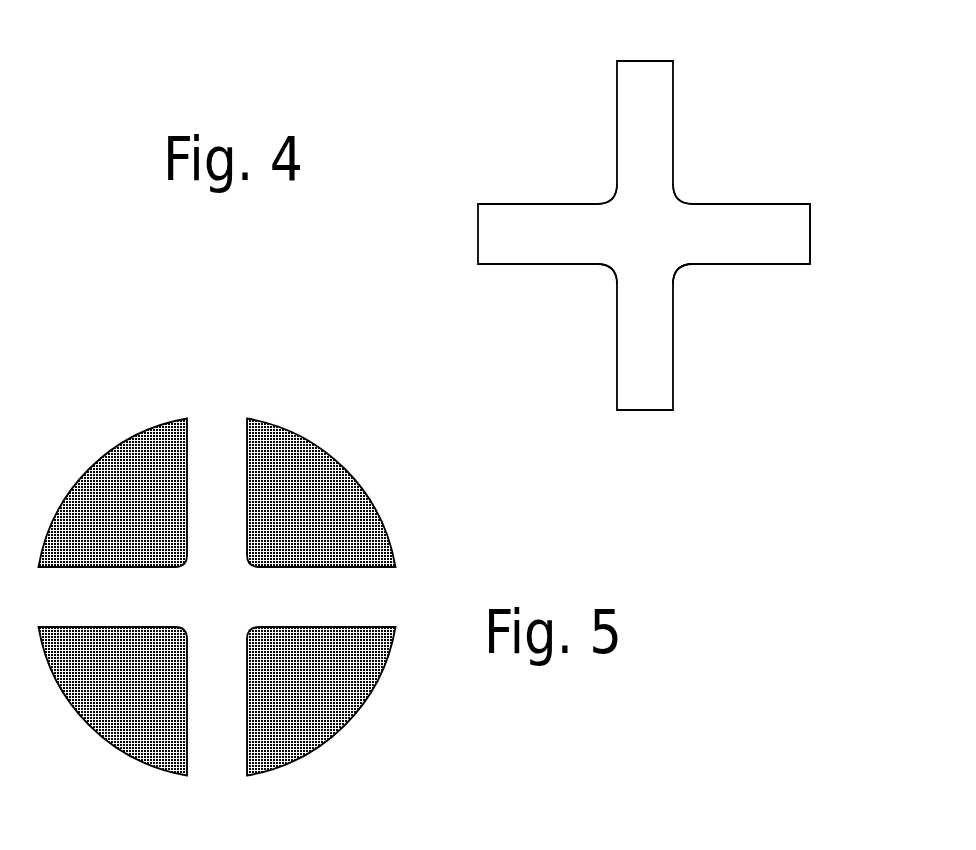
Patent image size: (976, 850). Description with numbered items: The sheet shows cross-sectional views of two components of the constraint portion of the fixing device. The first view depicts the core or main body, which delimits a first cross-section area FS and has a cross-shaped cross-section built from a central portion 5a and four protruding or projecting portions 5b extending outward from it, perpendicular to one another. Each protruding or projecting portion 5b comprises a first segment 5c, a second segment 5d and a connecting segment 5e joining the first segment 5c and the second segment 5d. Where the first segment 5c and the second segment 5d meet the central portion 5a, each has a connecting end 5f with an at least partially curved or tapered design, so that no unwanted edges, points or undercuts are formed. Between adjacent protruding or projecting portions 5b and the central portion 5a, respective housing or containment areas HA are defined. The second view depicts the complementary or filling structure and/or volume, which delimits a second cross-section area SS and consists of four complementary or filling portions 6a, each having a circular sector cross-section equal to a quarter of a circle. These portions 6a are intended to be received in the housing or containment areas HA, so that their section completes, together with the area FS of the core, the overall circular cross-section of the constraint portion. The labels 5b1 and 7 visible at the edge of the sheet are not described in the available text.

In FIG. 4, the central portion 5a is at (653, 233).
In FIG. 4, the protruding or projecting portion 5b is at (640, 97).
In FIG. 5, the protruding or projecting portion 5b is at (548, 849).
In FIG. 5, the arm end portion 5b1 is at (615, 849).
In FIG. 4, the first segment 5c is at (739, 203).
In FIG. 4, the second segment 5d is at (740, 264).
In FIG. 4, the connecting segment 5e is at (809, 250).
In FIG. 4, the connecting end 5f is at (685, 240).
In FIG. 5, the complementary or filling portion 6a is at (117, 508).
In FIG. 5, the connecting member 7 is at (727, 849).
In FIG. 4, the housing or containment area HA is at (580, 143).
In FIG. 4, the first cross-section area FS is at (438, 259).
In FIG. 5, the second cross-section area SS is at (215, 410).